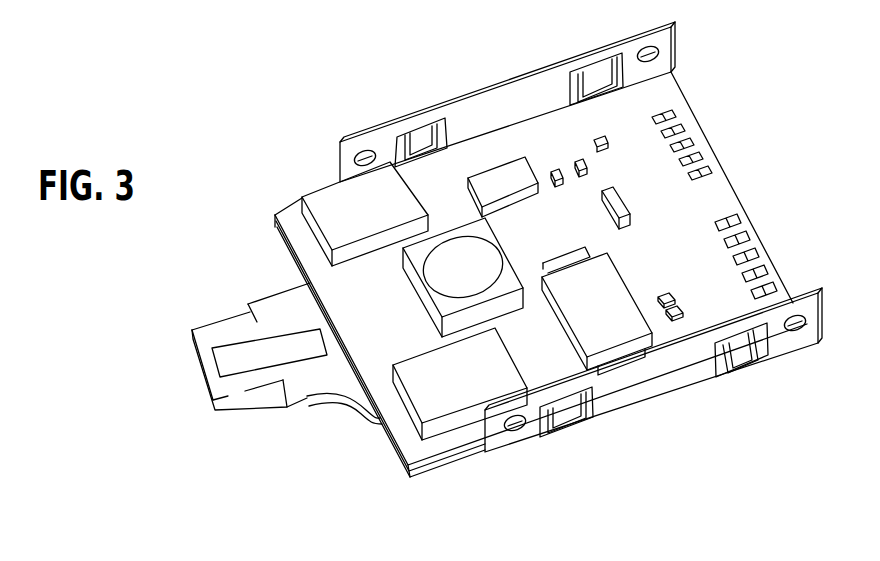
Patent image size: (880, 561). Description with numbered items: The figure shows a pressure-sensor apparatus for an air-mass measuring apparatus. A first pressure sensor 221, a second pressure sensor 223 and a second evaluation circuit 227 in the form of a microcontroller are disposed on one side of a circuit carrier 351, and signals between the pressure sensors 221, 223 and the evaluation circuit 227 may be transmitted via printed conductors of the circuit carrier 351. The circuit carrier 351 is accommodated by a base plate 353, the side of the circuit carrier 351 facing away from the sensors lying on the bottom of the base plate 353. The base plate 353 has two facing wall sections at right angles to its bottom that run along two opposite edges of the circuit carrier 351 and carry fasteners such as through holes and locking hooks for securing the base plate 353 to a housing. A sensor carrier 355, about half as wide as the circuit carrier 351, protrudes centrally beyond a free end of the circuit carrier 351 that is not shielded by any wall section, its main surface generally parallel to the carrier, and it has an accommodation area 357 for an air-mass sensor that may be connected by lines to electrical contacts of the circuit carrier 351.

The first pressure sensor 221 is at (453, 420).
The second pressure sensor 223 is at (335, 207).
The second evaluation circuit 227 is at (602, 290).
The circuit carrier 351 is at (710, 280).
The base plate 353 is at (485, 92).
The sensor carrier 355 is at (305, 378).
The accommodation area 357 is at (245, 357).